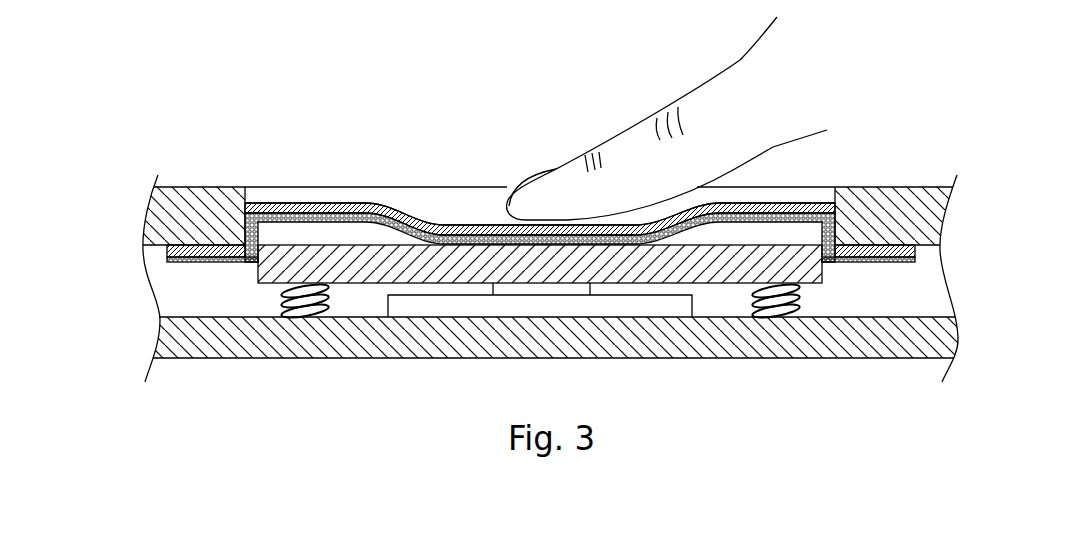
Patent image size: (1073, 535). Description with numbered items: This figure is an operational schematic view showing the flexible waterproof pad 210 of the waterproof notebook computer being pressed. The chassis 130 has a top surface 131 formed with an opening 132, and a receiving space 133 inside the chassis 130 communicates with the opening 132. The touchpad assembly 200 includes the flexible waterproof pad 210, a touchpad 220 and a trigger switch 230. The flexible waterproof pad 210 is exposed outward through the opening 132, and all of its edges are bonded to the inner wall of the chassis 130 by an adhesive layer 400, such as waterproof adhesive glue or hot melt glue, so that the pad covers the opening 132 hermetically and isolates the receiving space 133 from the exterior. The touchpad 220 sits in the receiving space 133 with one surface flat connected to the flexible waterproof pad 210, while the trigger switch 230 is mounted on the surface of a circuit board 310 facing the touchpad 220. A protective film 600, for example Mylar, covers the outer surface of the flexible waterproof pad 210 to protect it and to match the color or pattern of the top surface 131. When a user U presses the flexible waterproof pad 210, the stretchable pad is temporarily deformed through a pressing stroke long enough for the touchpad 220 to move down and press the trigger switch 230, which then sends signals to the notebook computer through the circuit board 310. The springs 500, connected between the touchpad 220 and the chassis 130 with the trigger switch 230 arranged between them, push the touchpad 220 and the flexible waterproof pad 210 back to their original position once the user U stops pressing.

The chassis 130 is at (575, 254).
The top surface 131 is at (893, 183).
The opening 132 is at (823, 185).
The receiving space 133 is at (933, 288).
The touchpad assembly 200 is at (500, 123).
The flexible waterproof pad 210 is at (363, 204).
The touchpad 220 is at (425, 257).
The trigger switch 230 is at (506, 290).
The circuit board 310 is at (663, 305).
The adhesive layer 400 is at (213, 256).
The springs 500 is at (266, 218).
The protective film 600 is at (321, 204).
The user U is at (700, 97).